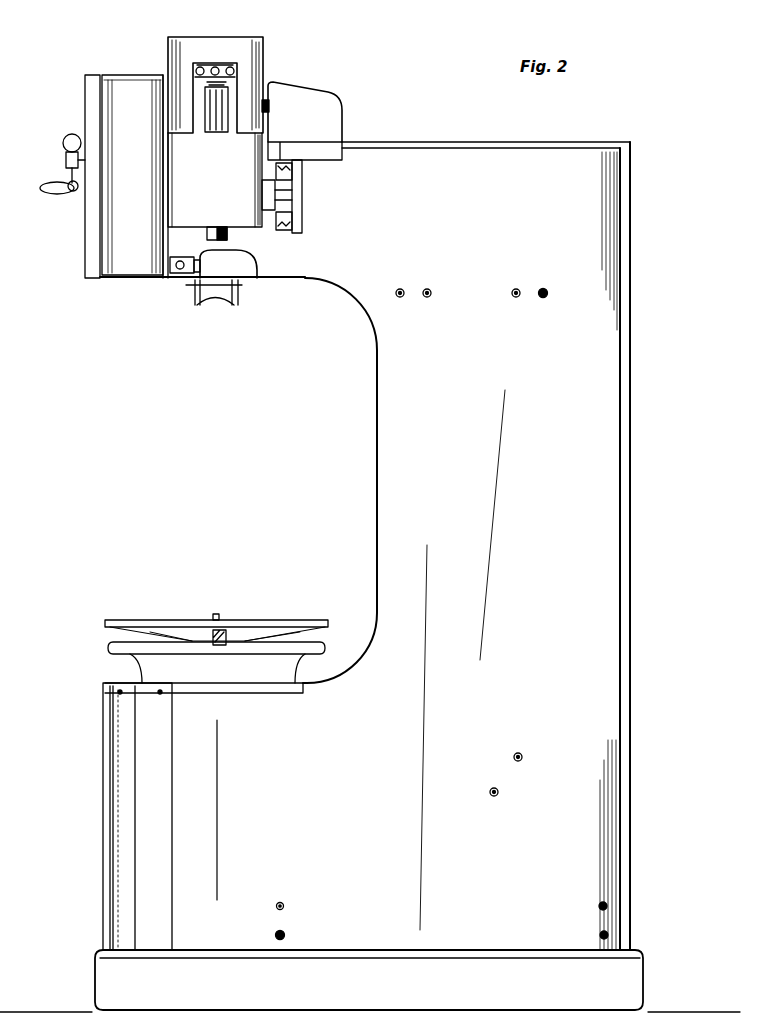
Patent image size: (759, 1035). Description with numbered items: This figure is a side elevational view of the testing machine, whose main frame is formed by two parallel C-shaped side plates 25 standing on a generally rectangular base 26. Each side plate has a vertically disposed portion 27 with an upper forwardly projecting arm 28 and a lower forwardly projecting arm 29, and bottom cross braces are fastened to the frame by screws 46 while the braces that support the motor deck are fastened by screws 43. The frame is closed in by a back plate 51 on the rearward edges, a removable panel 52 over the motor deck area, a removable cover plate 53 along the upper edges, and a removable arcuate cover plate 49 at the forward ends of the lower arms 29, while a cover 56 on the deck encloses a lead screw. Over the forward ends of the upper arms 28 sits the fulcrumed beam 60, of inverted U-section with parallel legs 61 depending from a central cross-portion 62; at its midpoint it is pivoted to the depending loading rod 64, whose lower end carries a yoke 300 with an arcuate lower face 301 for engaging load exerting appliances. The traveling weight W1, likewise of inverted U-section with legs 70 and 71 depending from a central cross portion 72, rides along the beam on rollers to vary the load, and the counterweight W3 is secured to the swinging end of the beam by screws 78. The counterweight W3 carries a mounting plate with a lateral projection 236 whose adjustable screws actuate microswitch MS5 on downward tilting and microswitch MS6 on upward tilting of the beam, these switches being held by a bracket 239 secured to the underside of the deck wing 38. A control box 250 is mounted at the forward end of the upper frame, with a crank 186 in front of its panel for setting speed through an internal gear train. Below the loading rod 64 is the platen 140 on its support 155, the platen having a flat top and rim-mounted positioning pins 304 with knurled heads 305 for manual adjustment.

The C-shaped side plates 25 is at (505, 533).
The base 26 is at (638, 954).
The vertically disposed portions 27 is at (376, 475).
The upper forwardly projecting arms 28 is at (281, 276).
The lower forwardly projecting arms 29 is at (185, 823).
The deck wing 38 is at (342, 160).
The screws 43 is at (403, 289).
The screws 46 is at (284, 904).
The removable arcuate cover plate 49 is at (104, 748).
The back plate 51 is at (631, 600).
The removable panel 52 is at (631, 304).
The removable cover plate 53 is at (482, 142).
The cover 56 is at (330, 96).
The fulcrumed beam 60 is at (228, 87).
The legs 61 is at (226, 133).
The central cross-portion 62 is at (218, 68).
The loading rod 64 is at (218, 282).
The leg 70 is at (262, 104).
The leg 71 is at (178, 78).
The central cross portion 72 is at (196, 37).
The screws 78 is at (228, 236).
The platen 140 is at (112, 620).
The table support 155 is at (110, 654).
The crank 186 is at (62, 172).
The lateral projection 236 is at (292, 200).
The bracket 239 is at (302, 190).
The control box 250 is at (76, 261).
The yoke 300 is at (196, 290).
The arcuate lower face 301 is at (222, 292).
The positioning pins 304 is at (220, 614).
The knurled heads 305 is at (228, 636).
The traveling weight W1 is at (262, 48).
The counterweight W3 is at (178, 219).
The microswitch MS5 is at (292, 222).
The microswitch MS6 is at (292, 172).